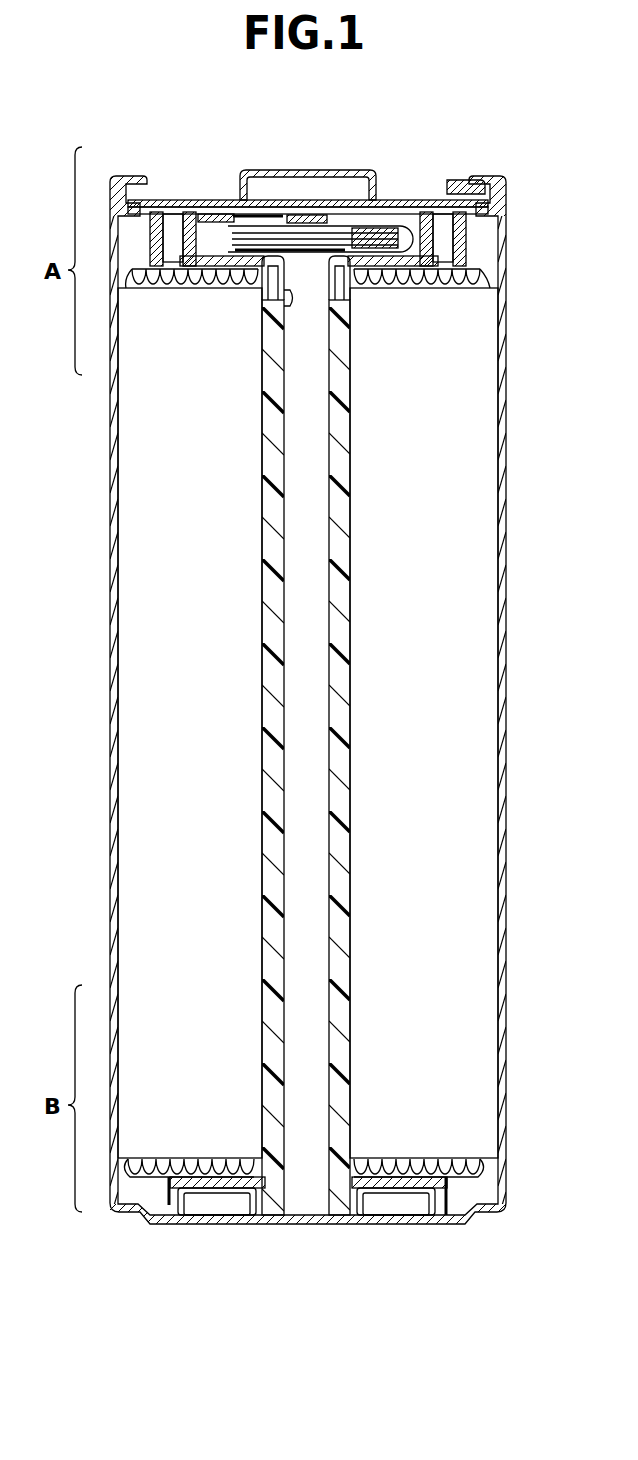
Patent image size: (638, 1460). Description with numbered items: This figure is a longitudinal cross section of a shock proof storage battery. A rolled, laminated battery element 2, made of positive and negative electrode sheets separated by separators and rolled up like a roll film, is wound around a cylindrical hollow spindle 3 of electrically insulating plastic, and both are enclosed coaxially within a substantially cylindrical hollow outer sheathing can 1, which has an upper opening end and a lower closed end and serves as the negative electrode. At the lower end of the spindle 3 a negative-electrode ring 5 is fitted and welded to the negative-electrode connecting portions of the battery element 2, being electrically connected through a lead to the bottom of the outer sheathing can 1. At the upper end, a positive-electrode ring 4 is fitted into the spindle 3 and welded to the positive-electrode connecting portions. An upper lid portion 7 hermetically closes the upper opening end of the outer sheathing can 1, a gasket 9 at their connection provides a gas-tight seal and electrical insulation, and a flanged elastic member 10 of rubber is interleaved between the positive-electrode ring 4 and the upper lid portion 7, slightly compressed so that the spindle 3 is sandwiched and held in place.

The outer sheathing can 1 is at (500, 697).
The rolled, laminated battery element 2 is at (462, 825).
The cylindrical hollow spindle 3 is at (337, 665).
The positive-electrode ring 4 is at (265, 315).
The negative-electrode ring 5 is at (450, 1225).
The upper lid portion 7 is at (358, 155).
The gasket 9 is at (455, 178).
The flanged elastic member 10 is at (200, 214).